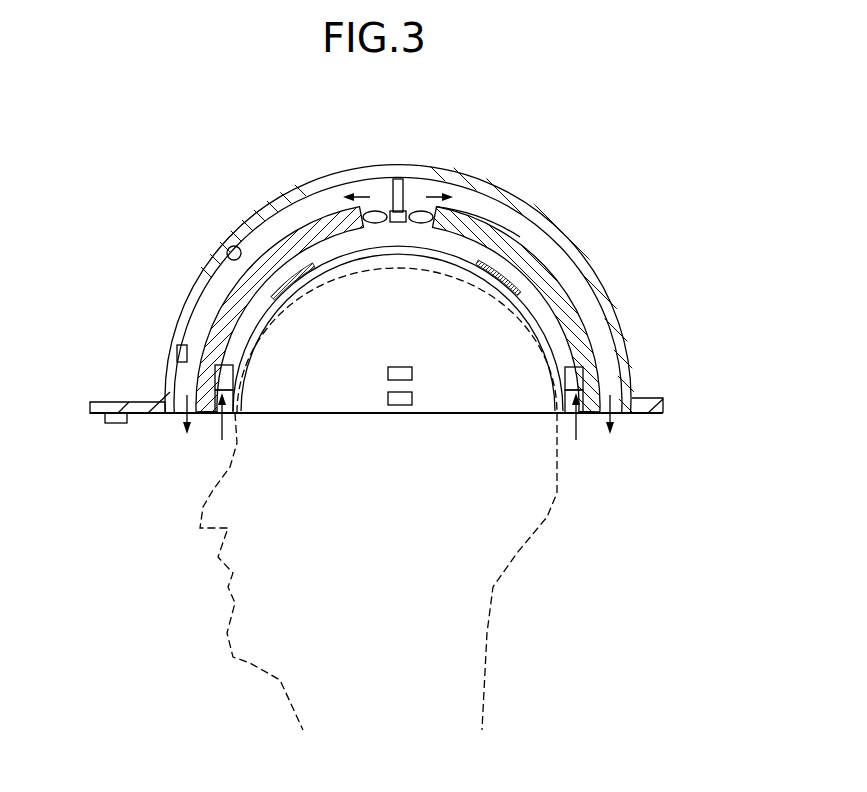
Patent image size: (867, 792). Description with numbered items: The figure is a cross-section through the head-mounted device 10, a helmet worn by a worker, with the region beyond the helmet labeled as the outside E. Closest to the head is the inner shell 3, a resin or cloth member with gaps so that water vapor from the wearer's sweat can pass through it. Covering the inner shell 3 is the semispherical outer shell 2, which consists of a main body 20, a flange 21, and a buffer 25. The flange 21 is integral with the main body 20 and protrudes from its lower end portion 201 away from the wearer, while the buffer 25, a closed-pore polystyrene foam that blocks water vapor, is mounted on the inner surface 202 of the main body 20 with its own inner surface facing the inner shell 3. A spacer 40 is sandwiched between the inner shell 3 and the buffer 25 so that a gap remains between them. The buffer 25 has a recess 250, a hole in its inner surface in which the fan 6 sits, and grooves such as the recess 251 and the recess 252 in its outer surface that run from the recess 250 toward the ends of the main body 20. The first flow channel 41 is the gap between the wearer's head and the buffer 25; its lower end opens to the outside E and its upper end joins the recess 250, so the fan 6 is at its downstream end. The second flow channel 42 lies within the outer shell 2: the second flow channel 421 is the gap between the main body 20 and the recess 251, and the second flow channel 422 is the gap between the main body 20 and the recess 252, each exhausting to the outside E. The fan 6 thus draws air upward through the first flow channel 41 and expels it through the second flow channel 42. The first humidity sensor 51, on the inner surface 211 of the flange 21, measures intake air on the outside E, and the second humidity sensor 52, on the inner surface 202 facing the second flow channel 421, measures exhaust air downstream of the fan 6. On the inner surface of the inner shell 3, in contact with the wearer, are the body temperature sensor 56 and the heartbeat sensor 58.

The head-mounted device 10 is at (628, 148).
The outer shell 2 is at (461, 149).
The main body 20 is at (390, 181).
The lower end portion 201 is at (168, 405).
The inner surface 202 is at (240, 250).
The flange 21 is at (115, 401).
The inner surface 211 is at (138, 416).
The buffer 25 is at (333, 213).
The recess 250 is at (482, 197).
The recess 251 is at (302, 226).
The recess 252 is at (585, 302).
The inner shell 3 is at (590, 340).
The spacer 40 is at (215, 372).
The first flow channel 41 is at (506, 254).
The second flow channel 42 is at (572, 264).
The second flow channel 421 is at (267, 216).
The second flow channel 422 is at (583, 253).
The first humidity sensor 51 is at (113, 424).
The second humidity sensor 52 is at (181, 344).
The body temperature sensor 56 is at (412, 373).
The heartbeat sensor 58 is at (412, 398).
The fan 6 is at (420, 211).
The outside E is at (150, 529).